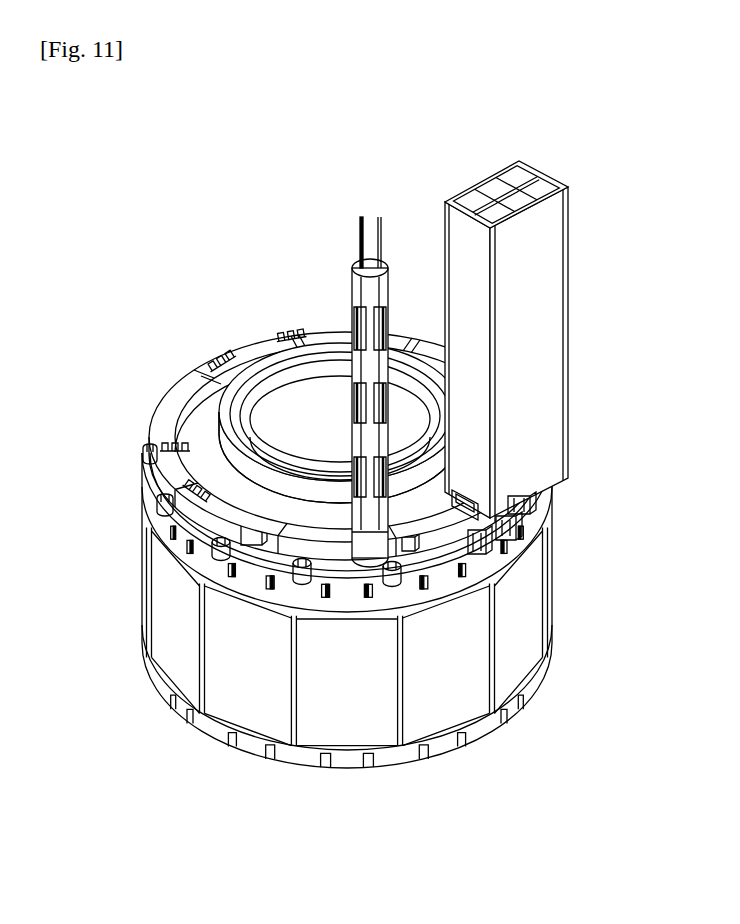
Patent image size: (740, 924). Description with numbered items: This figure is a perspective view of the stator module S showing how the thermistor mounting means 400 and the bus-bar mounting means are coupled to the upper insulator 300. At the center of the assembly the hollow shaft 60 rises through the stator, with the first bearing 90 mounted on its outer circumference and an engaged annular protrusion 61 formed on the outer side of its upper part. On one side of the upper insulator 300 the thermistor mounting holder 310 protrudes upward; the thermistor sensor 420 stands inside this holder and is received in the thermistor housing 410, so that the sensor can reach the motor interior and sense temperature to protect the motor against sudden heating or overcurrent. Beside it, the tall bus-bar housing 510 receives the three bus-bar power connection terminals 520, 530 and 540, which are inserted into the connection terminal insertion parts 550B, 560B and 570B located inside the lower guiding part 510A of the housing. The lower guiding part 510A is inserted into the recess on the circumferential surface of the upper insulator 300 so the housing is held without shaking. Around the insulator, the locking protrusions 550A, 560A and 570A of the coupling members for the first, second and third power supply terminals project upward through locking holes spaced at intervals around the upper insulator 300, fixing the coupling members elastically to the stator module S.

The stator module S is at (163, 694).
The hollow shaft 60 is at (296, 396).
The engaged annular protrusion 61 is at (250, 365).
The first bearing 90 is at (207, 378).
The upper insulator 300 is at (173, 425).
The thermistor mounting holder 310 is at (400, 572).
The thermistor mounting means 400 is at (350, 302).
The thermistor housing 410 is at (354, 282).
The thermistor sensor 420 is at (376, 216).
The bus-bar housing 510 is at (566, 292).
The lower guiding part 510A is at (468, 490).
The bus-bar power connection terminal 520 is at (538, 182).
The bus-bar power connection terminal 530 is at (466, 192).
The bus-bar power connection terminal 540 is at (490, 202).
The locking protrusion 550A is at (296, 586).
The locking protrusion 560A is at (221, 549).
The locking protrusion 570A is at (392, 574).
The connection terminal insertion part 550B is at (533, 510).
The connection terminal insertion part 560B is at (480, 544).
The connection terminal insertion part 570B is at (528, 520).